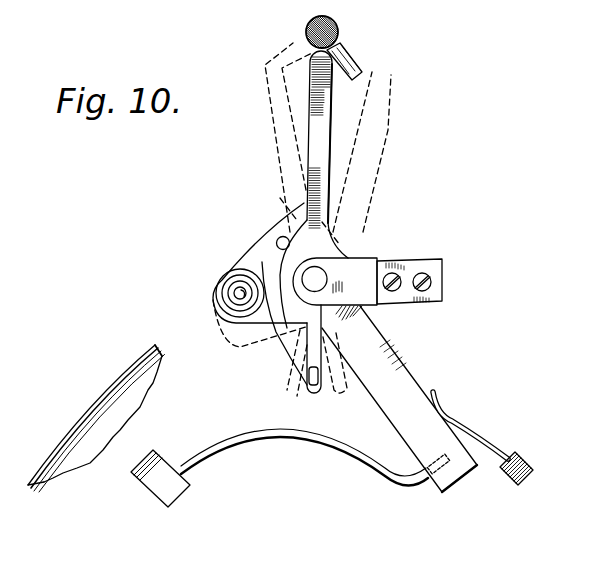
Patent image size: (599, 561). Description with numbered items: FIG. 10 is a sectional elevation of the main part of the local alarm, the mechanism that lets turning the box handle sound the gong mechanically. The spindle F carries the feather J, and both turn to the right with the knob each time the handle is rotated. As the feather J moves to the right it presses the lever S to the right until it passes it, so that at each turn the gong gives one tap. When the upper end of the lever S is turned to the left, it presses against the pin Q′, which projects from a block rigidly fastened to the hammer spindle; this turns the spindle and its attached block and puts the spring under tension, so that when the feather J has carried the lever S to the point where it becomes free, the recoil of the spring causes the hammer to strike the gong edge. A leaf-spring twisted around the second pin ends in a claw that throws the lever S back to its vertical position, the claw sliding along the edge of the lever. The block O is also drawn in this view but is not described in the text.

The spindle F is at (338, 30).
The feather J is at (362, 72).
The lever S is at (325, 114).
The pin Q′ is at (278, 240).
The bracket block O is at (442, 273).